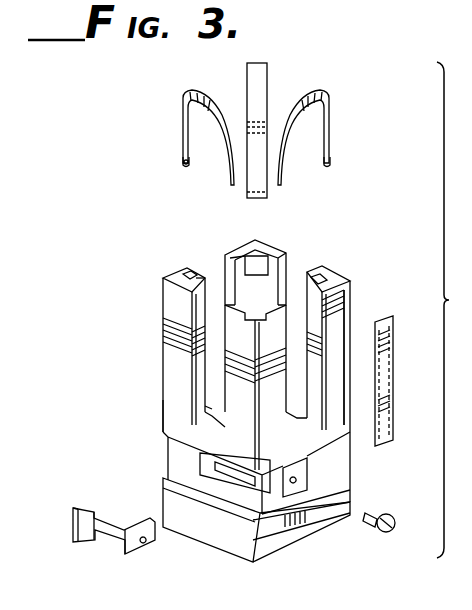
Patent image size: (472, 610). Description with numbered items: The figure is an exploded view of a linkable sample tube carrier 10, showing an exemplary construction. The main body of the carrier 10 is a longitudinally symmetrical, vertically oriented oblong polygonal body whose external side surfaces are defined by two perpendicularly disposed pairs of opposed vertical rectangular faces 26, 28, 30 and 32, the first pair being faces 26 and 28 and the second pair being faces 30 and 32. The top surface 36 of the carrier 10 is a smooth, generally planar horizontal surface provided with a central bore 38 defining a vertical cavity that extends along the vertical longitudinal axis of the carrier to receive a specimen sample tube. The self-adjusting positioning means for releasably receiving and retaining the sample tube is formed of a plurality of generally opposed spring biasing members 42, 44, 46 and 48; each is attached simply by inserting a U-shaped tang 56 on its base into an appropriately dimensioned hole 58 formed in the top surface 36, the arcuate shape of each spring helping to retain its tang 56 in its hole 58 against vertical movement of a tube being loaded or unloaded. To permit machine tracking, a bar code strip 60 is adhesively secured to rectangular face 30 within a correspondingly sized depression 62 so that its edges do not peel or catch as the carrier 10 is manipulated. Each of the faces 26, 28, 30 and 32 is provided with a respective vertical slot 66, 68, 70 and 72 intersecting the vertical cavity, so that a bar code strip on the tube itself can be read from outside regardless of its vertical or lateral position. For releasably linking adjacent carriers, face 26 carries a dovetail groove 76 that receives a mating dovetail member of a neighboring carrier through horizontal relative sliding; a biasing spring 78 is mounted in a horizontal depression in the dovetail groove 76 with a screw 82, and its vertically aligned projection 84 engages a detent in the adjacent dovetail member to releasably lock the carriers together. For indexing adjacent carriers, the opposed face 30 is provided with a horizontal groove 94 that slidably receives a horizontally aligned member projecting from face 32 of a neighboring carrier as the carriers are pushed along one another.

The sample tube carrier 10 is at (150, 363).
The vertical rectangular face 26 is at (172, 386).
The vertical rectangular face 28 is at (352, 279).
The vertical rectangular face 30 is at (350, 463).
The vertical rectangular face 32 is at (163, 306).
The top surface 36 is at (280, 250).
The central bore 38 is at (204, 280).
The spring biasing member 42 is at (204, 72).
The spring biasing member 44 is at (267, 72).
The spring biasing member 46 is at (324, 94).
The spring biasing member 48 is at (267, 192).
The U-shaped tang 56 is at (193, 157).
The hole 58 is at (189, 275).
The bar code strip 60 is at (393, 376).
The depression 62 is at (352, 308).
The vertical slot 66 is at (216, 384).
The vertical slot 68 is at (290, 266).
The vertical slot 70 is at (300, 406).
The vertical slot 72 is at (228, 262).
The dovetail groove 76 is at (170, 452).
The biasing spring 78 is at (106, 544).
The screw 82 is at (368, 532).
The vertically aligned projection 84 is at (72, 516).
The horizontal groove 94 is at (285, 545).